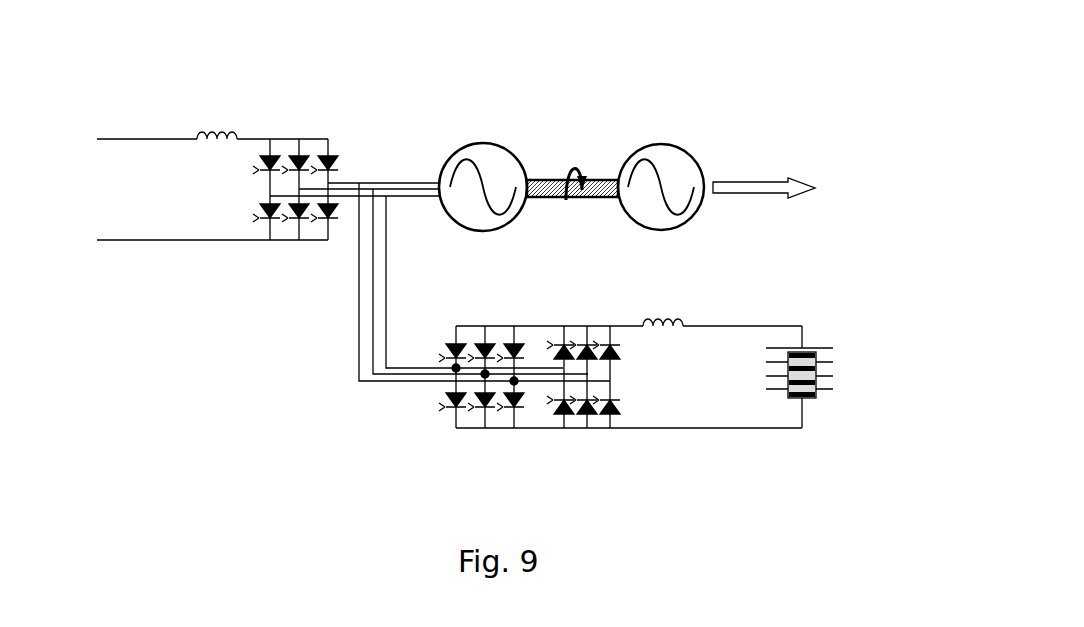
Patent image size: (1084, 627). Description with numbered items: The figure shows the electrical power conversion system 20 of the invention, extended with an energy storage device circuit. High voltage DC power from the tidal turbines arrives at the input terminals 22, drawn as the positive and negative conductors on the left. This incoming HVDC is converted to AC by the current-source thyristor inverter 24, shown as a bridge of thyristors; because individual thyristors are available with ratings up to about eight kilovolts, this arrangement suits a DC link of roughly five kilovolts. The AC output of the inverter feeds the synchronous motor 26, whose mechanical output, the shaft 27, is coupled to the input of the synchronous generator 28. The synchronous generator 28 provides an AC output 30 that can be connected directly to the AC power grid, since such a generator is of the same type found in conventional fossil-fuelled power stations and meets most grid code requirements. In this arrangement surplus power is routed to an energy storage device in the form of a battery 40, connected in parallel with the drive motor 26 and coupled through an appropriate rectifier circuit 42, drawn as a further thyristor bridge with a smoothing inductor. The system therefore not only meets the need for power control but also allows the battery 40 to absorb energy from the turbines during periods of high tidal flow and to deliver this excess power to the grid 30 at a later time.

The electrical power conversion system 20 is at (177, 72).
The input terminals 22 is at (143, 260).
The current-source thyristor inverter 24 is at (352, 118).
The synchronous motor 26 is at (465, 227).
The shaft 27 is at (547, 175).
The synchronous generator 28 is at (652, 227).
The AC output 30 is at (778, 165).
The battery 40 is at (840, 410).
The rectifier circuit 42 is at (477, 455).